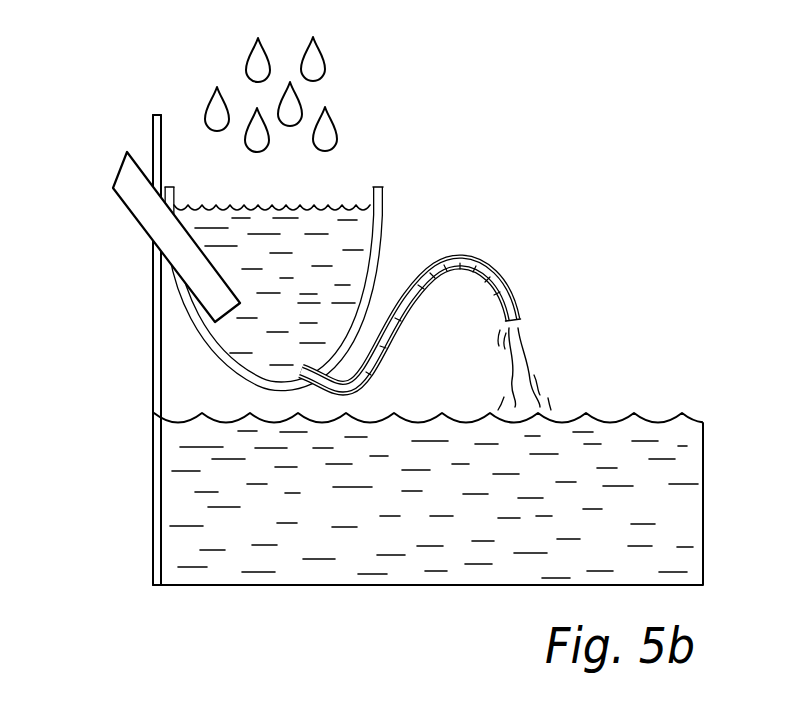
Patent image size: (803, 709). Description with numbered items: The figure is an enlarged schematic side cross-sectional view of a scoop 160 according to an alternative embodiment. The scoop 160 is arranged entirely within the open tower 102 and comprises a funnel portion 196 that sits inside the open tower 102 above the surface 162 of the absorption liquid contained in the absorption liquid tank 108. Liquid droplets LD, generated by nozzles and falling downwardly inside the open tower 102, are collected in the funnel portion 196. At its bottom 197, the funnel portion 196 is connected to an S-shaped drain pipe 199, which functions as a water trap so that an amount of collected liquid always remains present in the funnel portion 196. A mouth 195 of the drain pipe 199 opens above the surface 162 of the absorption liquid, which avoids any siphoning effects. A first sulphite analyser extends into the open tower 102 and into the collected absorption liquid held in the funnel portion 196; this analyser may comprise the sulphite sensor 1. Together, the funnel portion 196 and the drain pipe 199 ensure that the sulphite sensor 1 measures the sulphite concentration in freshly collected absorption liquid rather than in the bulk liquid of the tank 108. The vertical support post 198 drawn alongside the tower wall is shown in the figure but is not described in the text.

The sulphite sensor 1 is at (137, 220).
The liquid droplets LD is at (318, 53).
The open tower 102 is at (153, 407).
The absorption liquid tank 108 is at (153, 507).
The scoop 160 is at (420, 122).
The surface of absorption liquid 162 is at (610, 424).
The mouth of the drain pipe 195 is at (515, 328).
The funnel portion 196 is at (384, 209).
The bottom of the funnel portion 197 is at (236, 378).
The support post 198 is at (152, 137).
The drain pipe 199 is at (511, 290).